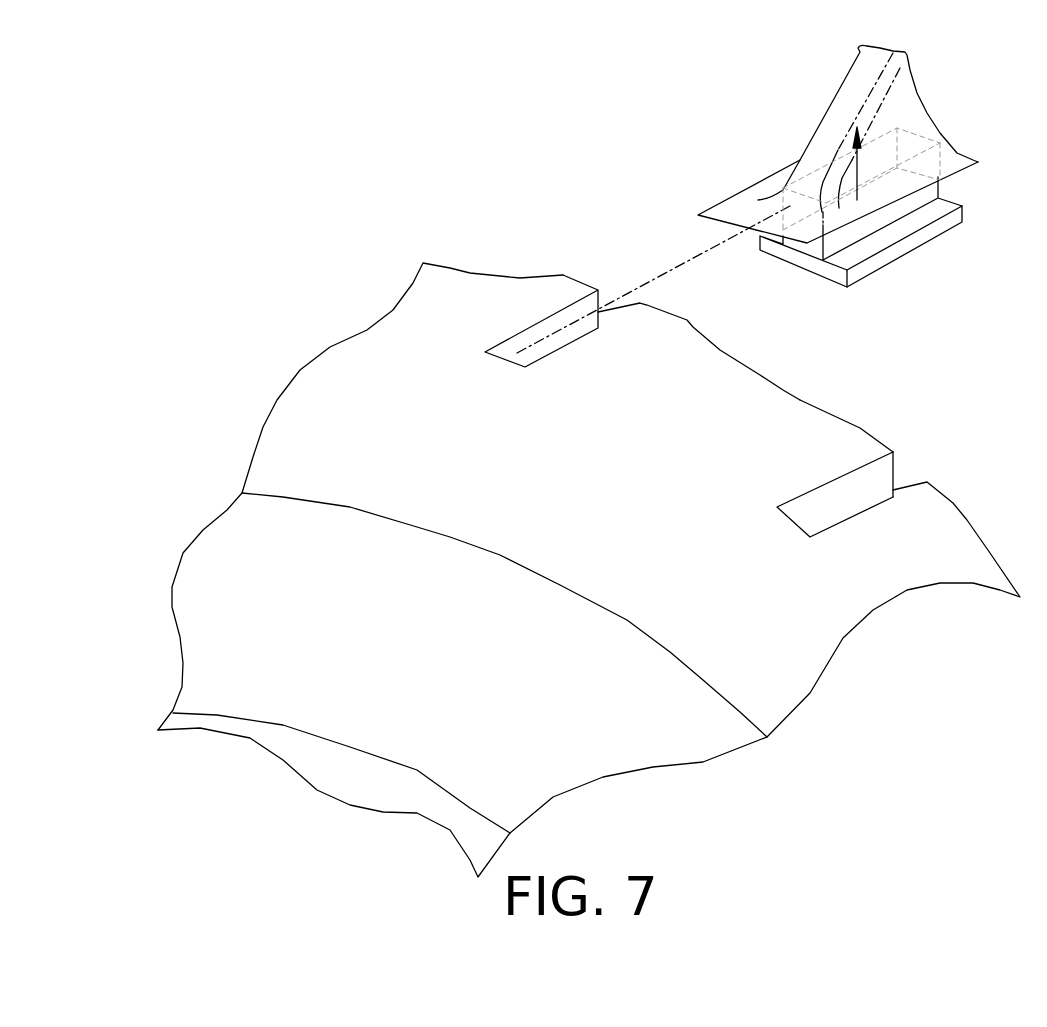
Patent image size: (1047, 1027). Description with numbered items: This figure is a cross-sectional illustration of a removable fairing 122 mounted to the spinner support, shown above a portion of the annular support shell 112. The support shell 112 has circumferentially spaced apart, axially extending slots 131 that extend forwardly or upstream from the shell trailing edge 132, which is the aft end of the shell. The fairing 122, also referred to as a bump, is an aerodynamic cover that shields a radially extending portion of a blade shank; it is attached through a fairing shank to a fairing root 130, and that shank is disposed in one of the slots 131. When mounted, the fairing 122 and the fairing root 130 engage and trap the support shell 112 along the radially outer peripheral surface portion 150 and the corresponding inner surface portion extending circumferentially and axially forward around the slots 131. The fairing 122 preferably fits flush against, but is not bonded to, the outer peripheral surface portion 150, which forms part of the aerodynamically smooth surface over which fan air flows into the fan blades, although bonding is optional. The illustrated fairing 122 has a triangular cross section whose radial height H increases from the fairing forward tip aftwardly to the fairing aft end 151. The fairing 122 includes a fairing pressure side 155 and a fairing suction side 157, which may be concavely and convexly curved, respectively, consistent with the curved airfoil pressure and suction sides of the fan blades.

The support shell 112 is at (388, 368).
The removable fairing 122 is at (903, 90).
The fairing root 130 is at (903, 247).
The slot 131 is at (873, 472).
The shell trailing edge 132 is at (770, 378).
The outer peripheral surface portion 150 is at (862, 450).
The fairing aft end 151 is at (933, 115).
The fairing pressure side 155 is at (830, 112).
The fairing suction side 157 is at (903, 138).
The radial height H is at (850, 170).